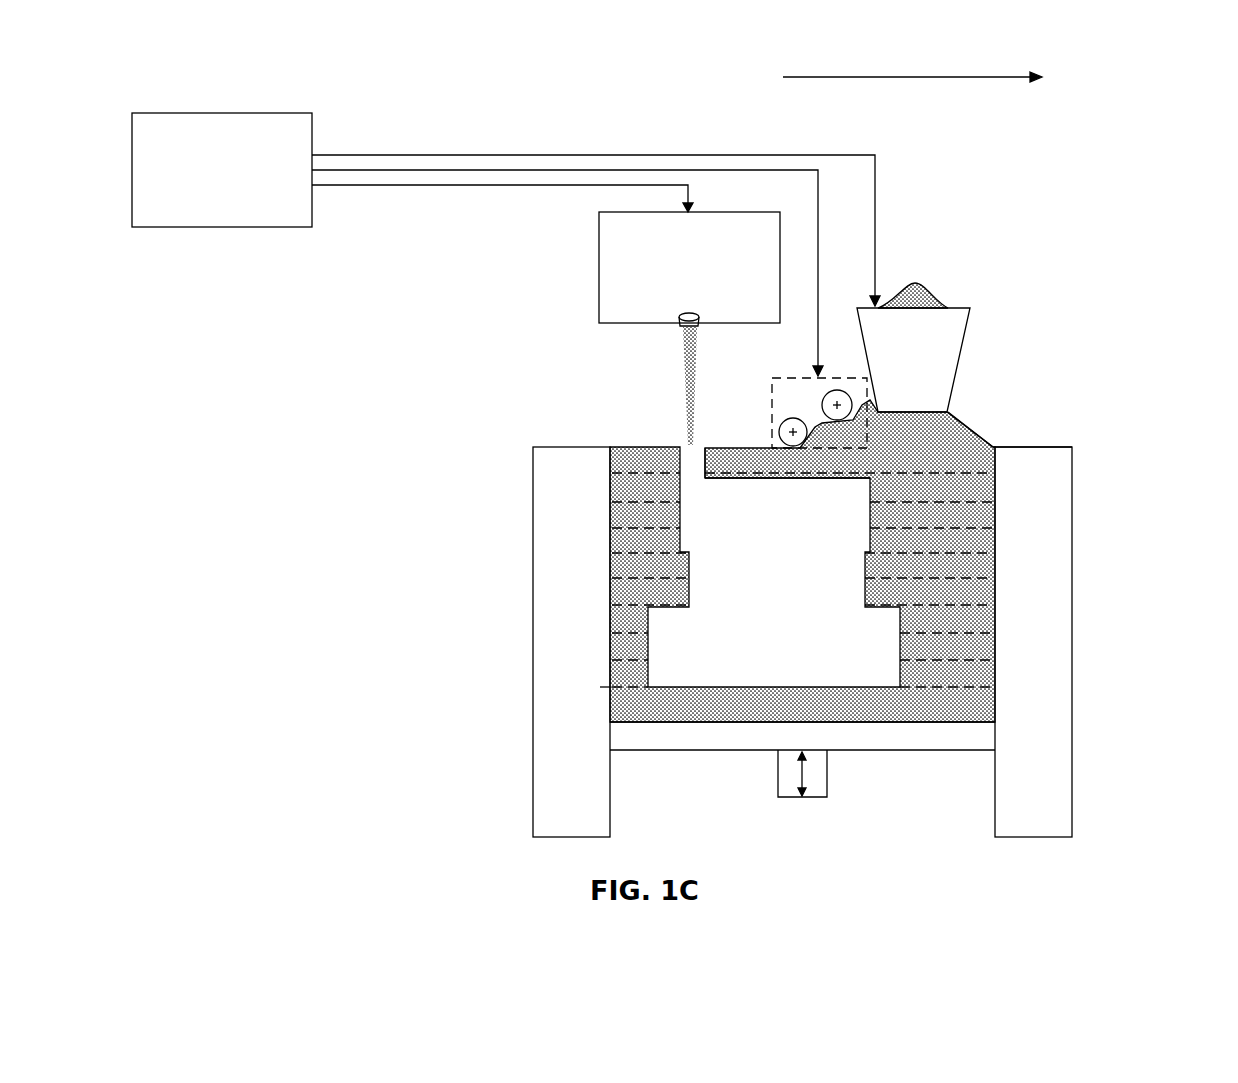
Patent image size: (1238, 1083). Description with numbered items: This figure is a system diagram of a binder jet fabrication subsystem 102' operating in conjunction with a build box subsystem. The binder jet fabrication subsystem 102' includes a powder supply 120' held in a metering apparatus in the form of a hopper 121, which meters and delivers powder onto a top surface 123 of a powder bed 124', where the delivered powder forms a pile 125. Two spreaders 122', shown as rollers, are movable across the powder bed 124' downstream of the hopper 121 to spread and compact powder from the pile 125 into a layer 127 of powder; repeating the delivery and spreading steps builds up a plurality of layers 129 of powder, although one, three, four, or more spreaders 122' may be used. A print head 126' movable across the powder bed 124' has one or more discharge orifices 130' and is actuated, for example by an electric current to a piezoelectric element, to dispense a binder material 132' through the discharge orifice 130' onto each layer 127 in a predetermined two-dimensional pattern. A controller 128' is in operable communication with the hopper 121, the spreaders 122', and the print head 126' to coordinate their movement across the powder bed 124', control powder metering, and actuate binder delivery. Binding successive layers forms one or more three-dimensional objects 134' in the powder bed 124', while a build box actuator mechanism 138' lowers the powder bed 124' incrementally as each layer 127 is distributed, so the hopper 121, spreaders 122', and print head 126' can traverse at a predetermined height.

The binder jet fabrication subsystem 102' is at (575, 211).
The controller 128' is at (222, 206).
The print head 126' is at (646, 267).
The discharge orifice 130' is at (736, 340).
The binder material 132' is at (637, 386).
The plurality of layers of powder 129 is at (590, 715).
The layer of powder 127 is at (588, 702).
The top surface 123 is at (709, 448).
The spreaders 122' is at (739, 413).
The hopper 121 is at (965, 308).
The powder supply 120' is at (927, 253).
The pile of powder 125 is at (975, 418).
The powder bed 124' is at (1035, 429).
The three-dimensional object 134' is at (802, 748).
The build box actuator mechanism 138' is at (850, 782).